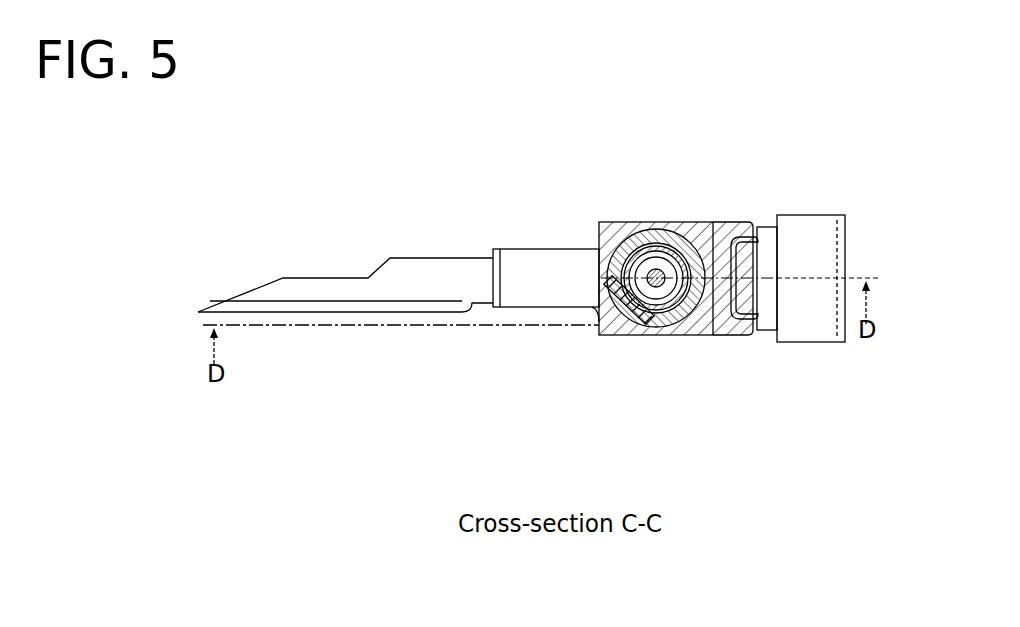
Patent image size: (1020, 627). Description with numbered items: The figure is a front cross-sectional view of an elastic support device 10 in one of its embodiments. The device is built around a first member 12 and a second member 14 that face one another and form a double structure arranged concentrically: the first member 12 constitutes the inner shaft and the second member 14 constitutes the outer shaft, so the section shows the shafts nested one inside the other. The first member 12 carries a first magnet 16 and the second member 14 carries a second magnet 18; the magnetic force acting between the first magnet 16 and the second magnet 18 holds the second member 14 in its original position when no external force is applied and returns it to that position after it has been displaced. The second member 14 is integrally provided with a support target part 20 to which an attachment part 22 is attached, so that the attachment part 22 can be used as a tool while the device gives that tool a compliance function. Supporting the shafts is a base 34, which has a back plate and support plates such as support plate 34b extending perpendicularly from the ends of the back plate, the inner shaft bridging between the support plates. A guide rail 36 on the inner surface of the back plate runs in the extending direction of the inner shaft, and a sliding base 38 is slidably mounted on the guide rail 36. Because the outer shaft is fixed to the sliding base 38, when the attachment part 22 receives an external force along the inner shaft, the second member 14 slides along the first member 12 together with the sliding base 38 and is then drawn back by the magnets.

The elastic support device 10 is at (617, 109).
The first member 12 is at (690, 222).
The second member 14 is at (615, 222).
The first magnet 16 is at (674, 320).
The second magnet 18 is at (655, 315).
The support target part 20 is at (523, 307).
The attachment part 22 is at (375, 308).
The base 34 is at (768, 330).
The support plate 34b is at (640, 322).
The guide rail 36 is at (750, 335).
The sliding base 38 is at (730, 315).